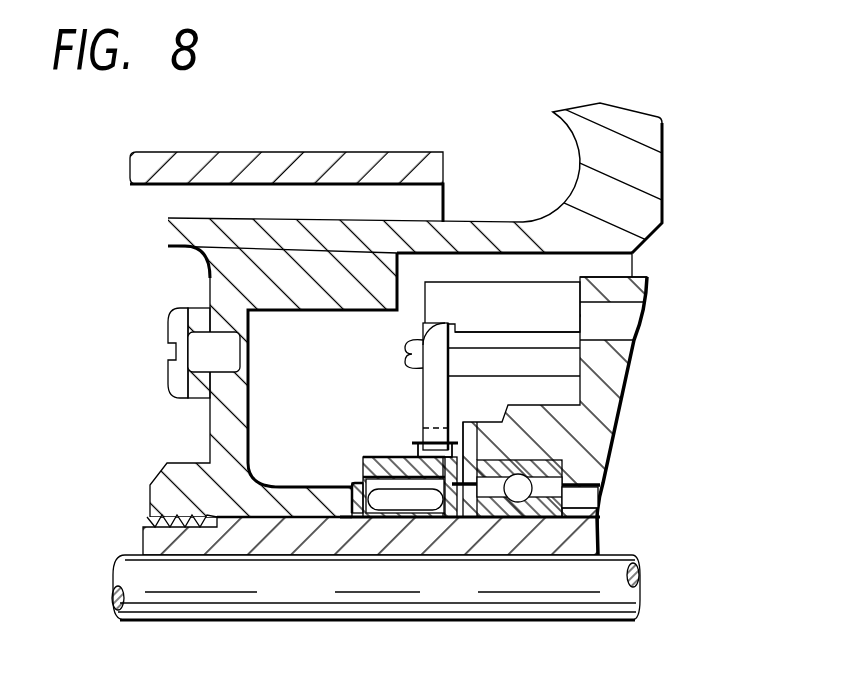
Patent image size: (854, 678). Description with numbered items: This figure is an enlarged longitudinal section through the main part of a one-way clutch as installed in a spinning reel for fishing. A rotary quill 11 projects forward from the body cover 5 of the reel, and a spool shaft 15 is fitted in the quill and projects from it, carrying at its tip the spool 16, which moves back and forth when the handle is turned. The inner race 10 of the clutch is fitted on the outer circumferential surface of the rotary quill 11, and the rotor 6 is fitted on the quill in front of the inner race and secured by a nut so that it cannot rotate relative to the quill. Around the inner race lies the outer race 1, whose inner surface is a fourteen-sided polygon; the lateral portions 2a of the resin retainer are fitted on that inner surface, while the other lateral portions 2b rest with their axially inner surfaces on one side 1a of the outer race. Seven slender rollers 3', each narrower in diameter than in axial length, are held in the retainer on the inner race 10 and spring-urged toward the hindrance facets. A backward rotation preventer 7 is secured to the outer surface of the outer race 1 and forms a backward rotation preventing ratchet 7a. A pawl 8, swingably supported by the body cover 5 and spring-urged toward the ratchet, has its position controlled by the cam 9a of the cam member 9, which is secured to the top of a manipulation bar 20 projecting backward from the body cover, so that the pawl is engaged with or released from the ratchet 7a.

The outer race 1 is at (397, 506).
The side of the outer race 1a is at (360, 470).
The lateral portions of the retainer 2a is at (449, 508).
The other lateral portions of the retainer 2b is at (350, 489).
The slender roller 3' is at (414, 585).
The body cover 5 is at (640, 377).
The rotor 6 is at (668, 182).
The backward rotation preventer 7 is at (367, 450).
The backward rotation preventing ratchet 7a is at (424, 437).
The backward rotation preventing pawl 8 is at (443, 394).
The cam member 9 is at (488, 268).
The cam 9a is at (580, 348).
The inner race 10 is at (380, 517).
The rotary quill 11 is at (592, 527).
The spool shaft 15 is at (125, 557).
The spool 16 is at (160, 150).
The manipulation bar 20 is at (637, 308).